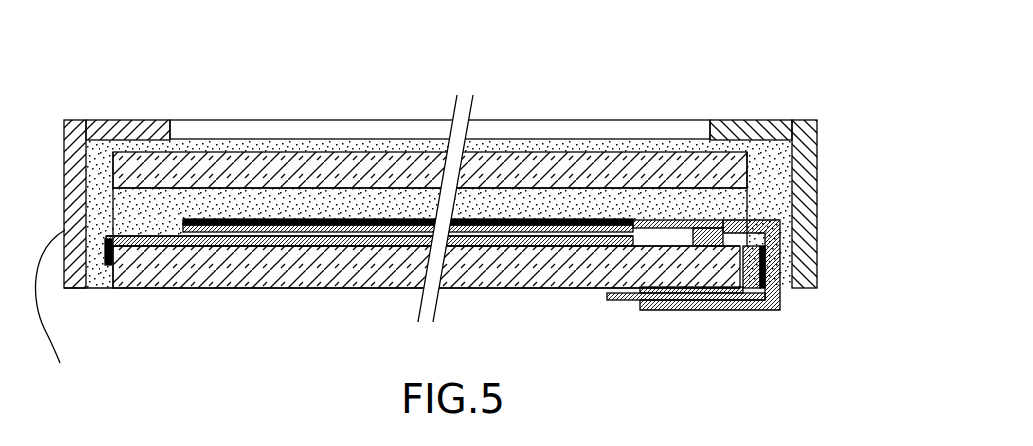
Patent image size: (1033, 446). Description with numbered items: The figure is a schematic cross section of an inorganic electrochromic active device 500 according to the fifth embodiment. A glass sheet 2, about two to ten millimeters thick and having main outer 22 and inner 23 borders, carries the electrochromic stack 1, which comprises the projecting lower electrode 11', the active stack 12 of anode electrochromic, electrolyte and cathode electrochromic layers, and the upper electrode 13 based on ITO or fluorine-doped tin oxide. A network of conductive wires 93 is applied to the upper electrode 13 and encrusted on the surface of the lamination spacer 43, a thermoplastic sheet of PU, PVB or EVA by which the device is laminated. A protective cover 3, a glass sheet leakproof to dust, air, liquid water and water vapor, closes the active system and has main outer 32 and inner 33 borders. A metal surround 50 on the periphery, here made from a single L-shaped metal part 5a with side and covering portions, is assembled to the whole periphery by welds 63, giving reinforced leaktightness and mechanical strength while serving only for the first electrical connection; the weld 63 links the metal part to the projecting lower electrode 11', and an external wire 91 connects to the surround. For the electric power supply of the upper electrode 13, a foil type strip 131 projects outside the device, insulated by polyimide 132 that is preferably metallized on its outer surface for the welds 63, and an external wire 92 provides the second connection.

The active device 500 is at (458, 199).
The metal surround 50 is at (94, 118).
The metal part 5a is at (140, 136).
The main outer border of the cover 32 is at (557, 139).
The protective cover 3 is at (512, 170).
The inner border of the cover 33 is at (608, 188).
The lamination spacer 43 is at (352, 210).
The weld 63 is at (780, 183).
The electrochromic stack 1 is at (369, 303).
The projecting lower electrode 11' is at (369, 282).
The upper electrode 13 is at (233, 226).
The active stack 12 is at (140, 346).
The network of conductive wires 93 is at (382, 242).
The glass sheet 2 is at (463, 270).
The main outer border of the glass sheet 22 is at (503, 288).
The inner border of the glass sheet 23 is at (533, 247).
The foil type strip 131 is at (787, 250).
The polyimide insulation 132 is at (785, 280).
The wire 92 is at (623, 300).
The wire 91 is at (62, 332).